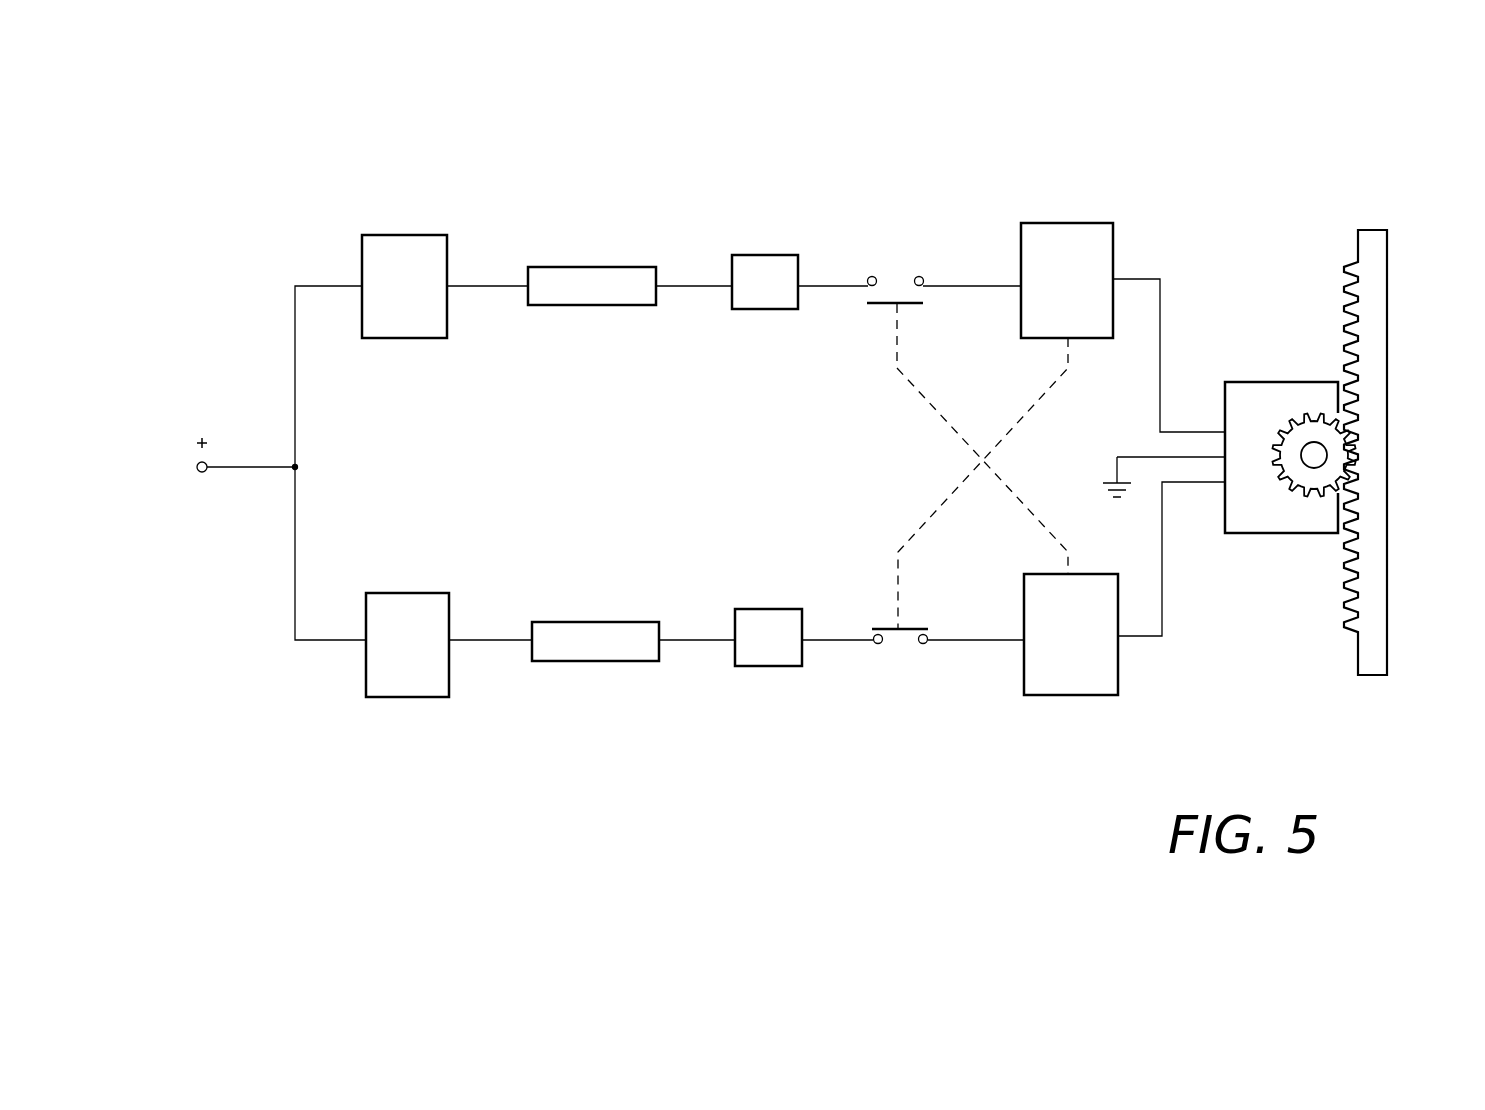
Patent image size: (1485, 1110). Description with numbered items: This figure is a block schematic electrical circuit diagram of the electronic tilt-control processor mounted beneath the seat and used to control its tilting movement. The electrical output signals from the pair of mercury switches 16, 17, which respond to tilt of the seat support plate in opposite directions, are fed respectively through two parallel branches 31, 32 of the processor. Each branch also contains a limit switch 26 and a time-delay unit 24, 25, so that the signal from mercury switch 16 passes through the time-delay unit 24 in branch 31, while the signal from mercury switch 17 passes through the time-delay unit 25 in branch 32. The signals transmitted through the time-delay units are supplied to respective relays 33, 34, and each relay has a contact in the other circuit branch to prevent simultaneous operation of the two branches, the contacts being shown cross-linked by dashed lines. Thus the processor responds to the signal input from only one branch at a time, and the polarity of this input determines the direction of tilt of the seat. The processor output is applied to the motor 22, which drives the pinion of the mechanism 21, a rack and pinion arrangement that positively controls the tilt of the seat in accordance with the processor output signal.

The mercury switch 16 is at (573, 266).
The mercury switch 17 is at (590, 663).
The mechanism 21 is at (1365, 440).
The motor 22 is at (1257, 522).
The time-delay unit 24 is at (757, 254).
The time-delay unit 25 is at (778, 668).
The limit switch 26 is at (392, 235).
The parallel branch 31 is at (322, 211).
The parallel branch 32 is at (322, 716).
The relay 33 is at (1070, 222).
The relay 34 is at (1068, 695).